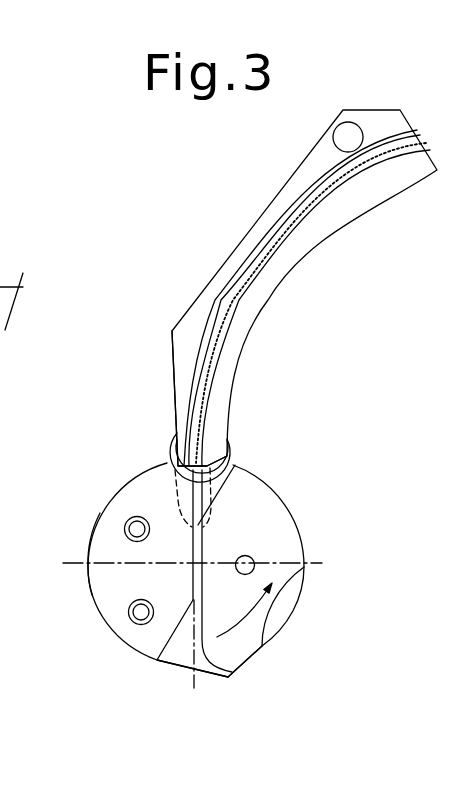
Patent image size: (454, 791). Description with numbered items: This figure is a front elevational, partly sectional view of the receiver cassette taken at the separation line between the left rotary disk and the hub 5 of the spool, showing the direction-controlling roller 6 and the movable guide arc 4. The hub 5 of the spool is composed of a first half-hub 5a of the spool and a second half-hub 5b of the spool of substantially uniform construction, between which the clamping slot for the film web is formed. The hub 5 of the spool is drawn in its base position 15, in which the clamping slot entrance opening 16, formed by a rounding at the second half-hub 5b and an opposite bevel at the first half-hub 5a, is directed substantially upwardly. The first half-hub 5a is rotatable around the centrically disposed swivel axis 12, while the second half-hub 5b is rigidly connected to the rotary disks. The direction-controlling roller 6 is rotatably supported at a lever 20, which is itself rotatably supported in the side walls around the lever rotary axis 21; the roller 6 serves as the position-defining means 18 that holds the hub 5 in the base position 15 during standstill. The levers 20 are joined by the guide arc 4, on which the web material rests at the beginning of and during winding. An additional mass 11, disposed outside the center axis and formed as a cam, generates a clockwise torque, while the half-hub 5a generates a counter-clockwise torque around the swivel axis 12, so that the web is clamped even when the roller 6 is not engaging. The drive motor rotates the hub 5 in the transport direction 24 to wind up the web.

The guide arc 4 is at (217, 357).
The hub of the spool 5 is at (282, 481).
The first half-hub of the spool 5a is at (283, 600).
The second half-hub of the spool 5b is at (110, 597).
The direction-controlling roller 6 is at (223, 462).
The additional mass 11 is at (211, 688).
The swivel axis 12 is at (254, 568).
The base position 15 is at (75, 532).
The clamping slot entrance opening 16 is at (203, 502).
The position-defining means 18 is at (160, 438).
The lever 20 is at (320, 266).
The lever rotary axis 21 is at (348, 135).
The transport direction 24 is at (250, 622).